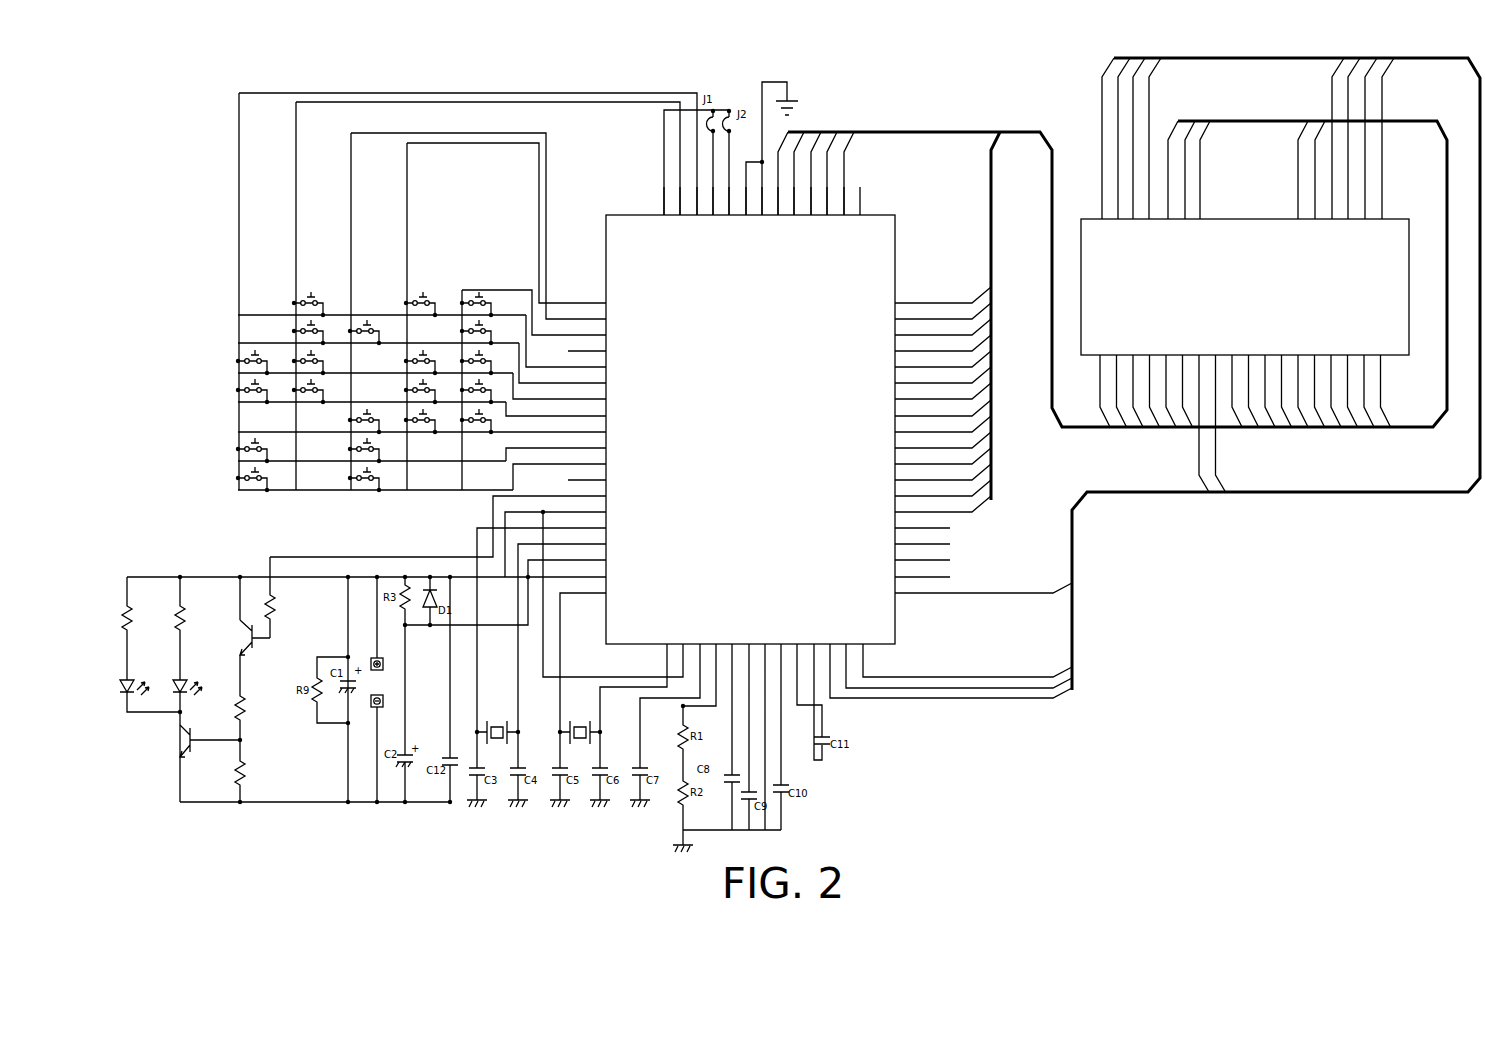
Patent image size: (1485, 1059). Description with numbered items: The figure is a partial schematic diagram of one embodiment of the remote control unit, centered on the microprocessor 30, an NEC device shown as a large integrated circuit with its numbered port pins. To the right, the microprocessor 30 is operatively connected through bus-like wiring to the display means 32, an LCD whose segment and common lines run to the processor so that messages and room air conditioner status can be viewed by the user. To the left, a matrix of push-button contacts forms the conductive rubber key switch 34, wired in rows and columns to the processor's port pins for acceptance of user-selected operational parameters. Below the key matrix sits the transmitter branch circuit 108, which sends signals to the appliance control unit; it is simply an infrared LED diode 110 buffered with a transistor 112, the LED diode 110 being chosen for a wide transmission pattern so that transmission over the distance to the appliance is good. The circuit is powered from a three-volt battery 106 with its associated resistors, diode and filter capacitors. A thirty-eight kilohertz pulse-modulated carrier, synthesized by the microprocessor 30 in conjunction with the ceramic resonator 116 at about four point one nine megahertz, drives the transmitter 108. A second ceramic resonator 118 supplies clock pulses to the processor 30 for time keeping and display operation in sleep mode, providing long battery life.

The microprocessor 30 is at (893, 636).
The display means 32 is at (1082, 243).
The conductive rubber key switch 34 is at (227, 498).
The battery power supply 106 is at (368, 701).
The transmitter branch circuit 108 is at (239, 813).
The infrared LED diode 110 is at (127, 687).
The transistor 112 is at (257, 628).
The ceramic resonator 116 is at (497, 744).
The second ceramic resonator 118 is at (580, 744).